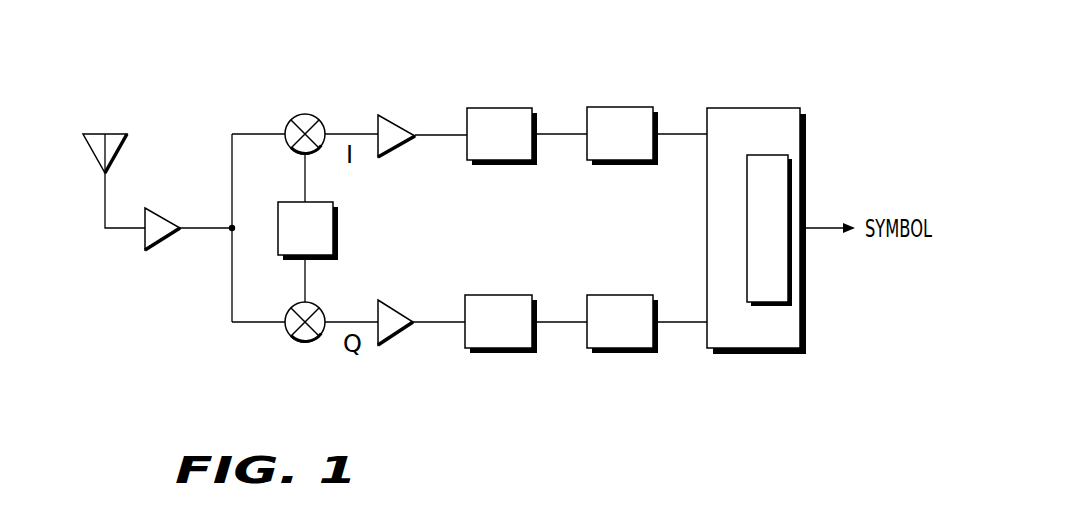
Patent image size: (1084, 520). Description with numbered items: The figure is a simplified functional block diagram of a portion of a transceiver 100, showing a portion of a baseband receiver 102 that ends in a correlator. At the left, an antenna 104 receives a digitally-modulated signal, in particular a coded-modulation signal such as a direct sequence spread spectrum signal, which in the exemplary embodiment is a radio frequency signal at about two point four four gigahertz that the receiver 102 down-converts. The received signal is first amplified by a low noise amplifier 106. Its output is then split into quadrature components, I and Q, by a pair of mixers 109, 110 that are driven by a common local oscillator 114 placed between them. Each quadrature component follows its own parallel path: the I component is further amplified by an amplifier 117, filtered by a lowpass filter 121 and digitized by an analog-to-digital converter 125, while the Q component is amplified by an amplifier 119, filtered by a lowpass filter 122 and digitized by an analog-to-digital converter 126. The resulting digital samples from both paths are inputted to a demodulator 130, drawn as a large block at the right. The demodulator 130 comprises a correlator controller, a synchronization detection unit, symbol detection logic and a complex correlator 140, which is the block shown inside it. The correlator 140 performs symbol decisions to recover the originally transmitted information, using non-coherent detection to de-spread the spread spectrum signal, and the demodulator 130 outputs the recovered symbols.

The transceiver 100 is at (500, 461).
The baseband receiver 102 is at (567, 56).
The antenna 104 is at (97, 133).
The low noise amplifier 106 is at (163, 216).
The mixer 109 is at (304, 113).
The mixer 110 is at (304, 343).
The local oscillator 114 is at (339, 229).
The amplifier 117 is at (396, 123).
The amplifier 119 is at (397, 336).
The lowpass filter 121 is at (495, 107).
The lowpass filter 122 is at (497, 351).
The analog-to-digital converter 125 is at (615, 107).
The analog-to-digital converter 126 is at (617, 351).
The demodulator 130 is at (756, 234).
The complex correlator 140 is at (767, 155).